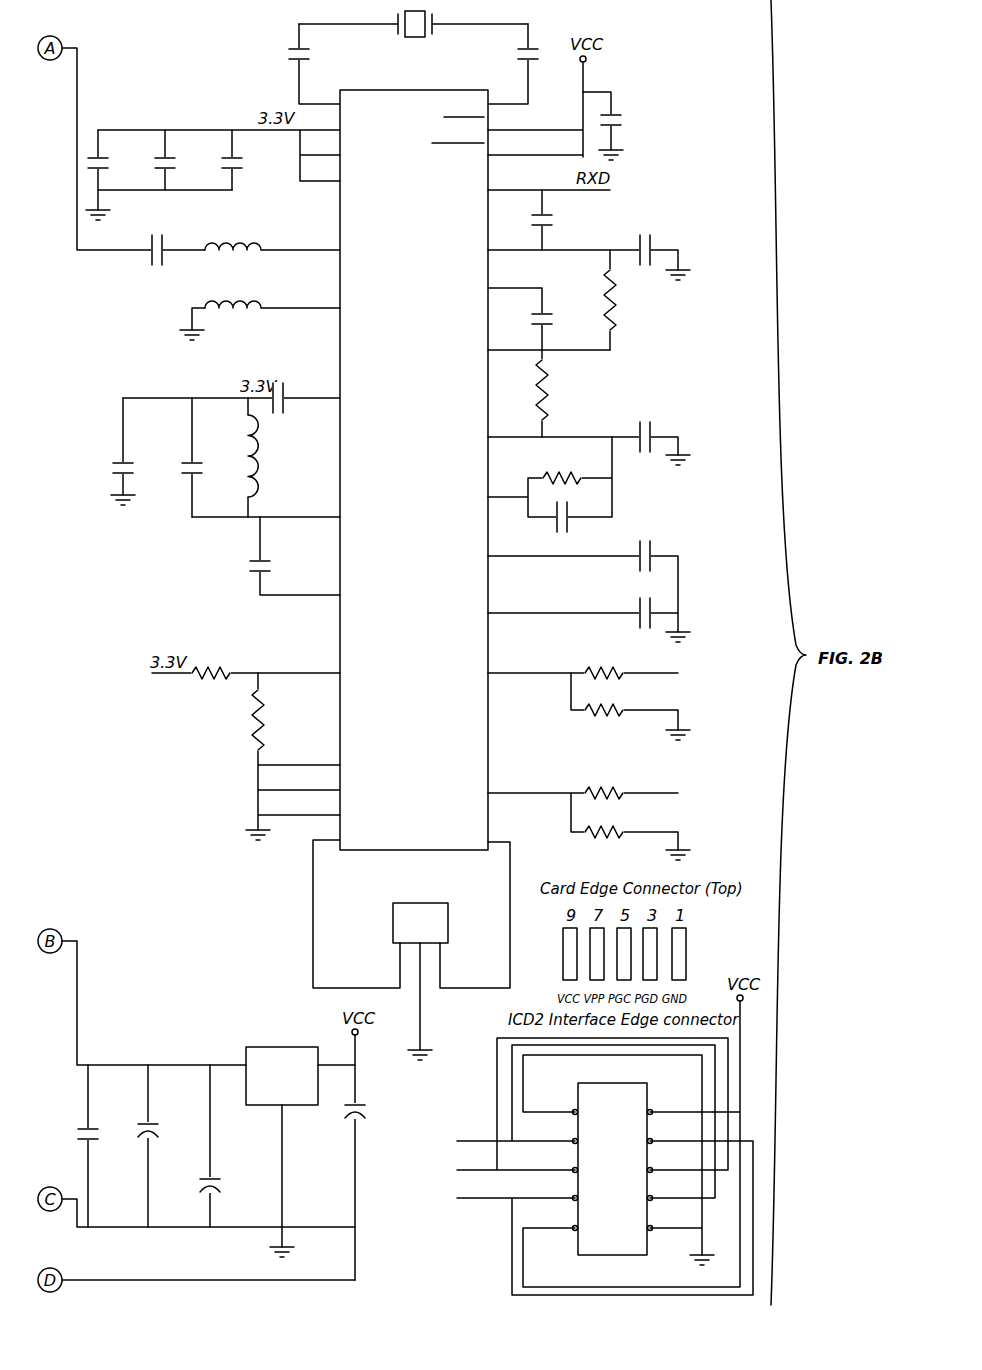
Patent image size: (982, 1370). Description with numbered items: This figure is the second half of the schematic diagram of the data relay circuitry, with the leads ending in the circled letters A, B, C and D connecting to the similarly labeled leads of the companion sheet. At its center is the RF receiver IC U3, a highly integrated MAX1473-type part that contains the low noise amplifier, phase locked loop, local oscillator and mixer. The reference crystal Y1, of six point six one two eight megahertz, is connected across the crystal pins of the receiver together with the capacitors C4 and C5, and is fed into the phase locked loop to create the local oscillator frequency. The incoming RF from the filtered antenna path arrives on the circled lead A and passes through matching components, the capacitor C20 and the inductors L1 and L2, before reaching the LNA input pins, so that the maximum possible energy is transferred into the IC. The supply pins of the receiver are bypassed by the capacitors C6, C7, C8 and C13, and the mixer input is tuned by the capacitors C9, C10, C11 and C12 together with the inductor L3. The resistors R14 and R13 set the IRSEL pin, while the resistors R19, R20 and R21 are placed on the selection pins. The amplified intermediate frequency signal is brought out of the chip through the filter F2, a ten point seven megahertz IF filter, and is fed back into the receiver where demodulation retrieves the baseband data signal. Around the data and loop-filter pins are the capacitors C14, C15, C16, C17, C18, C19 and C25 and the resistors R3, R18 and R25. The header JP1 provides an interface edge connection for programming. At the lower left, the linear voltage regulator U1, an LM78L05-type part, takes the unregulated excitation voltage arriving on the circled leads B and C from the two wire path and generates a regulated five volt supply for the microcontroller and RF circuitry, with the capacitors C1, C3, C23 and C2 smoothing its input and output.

The RF receiver IC U3 is at (414, 460).
The reference crystal Y1 is at (413, 32).
The 15pF capacitor C4 is at (317, 64).
The 15pF capacitor C5 is at (511, 64).
The 0.1uF capacitor C6 is at (118, 160).
The 0.01uF capacitor C7 is at (188, 160).
The 0.01uF capacitor C8 is at (255, 160).
The 220pF capacitor C20 is at (167, 254).
The 82nH inductor L1 is at (265, 232).
The 15nH inductor L2 is at (260, 305).
The 100pF capacitor C9 is at (297, 373).
The 2.7pF capacitor C10 is at (215, 457).
The 220pF capacitor C11 is at (149, 451).
The 15nH inductor L3 is at (274, 457).
The 100pF capacitor C12 is at (294, 556).
The resistor D.N.P R14 is at (246, 648).
The 0 ohm resistor R13 is at (293, 756).
The SFELF10M7FAOD-BD filter F2 is at (411, 950).
The 0.1uF capacitor C13 is at (624, 126).
The 10pF capacitor C14 is at (562, 220).
The 1000pF capacitor C16 is at (591, 233).
The 10K resistor R3 is at (627, 300).
The 470pF capacitor C15 is at (545, 319).
The 5.1K resistor R18 is at (563, 393).
The 0.47uF capacitor C17 is at (589, 420).
The 33K resistor R25 is at (550, 477).
The 0.47uF capacitor C25 is at (572, 513).
The 1500pF capacitor C18 is at (591, 553).
The 220pF capacitor C19 is at (589, 609).
The resistor D.N.P. R19 is at (586, 664).
The 0 ohm resistor R20 is at (630, 706).
The resistor D.N.P. R21 is at (589, 814).
The ICD2 interface edge connector header JP1 is at (605, 1148).
The linear voltage regulator U1 is at (293, 1129).
The 10uF capacitor C2 is at (376, 1157).
The 0.1uF capacitor C1 is at (111, 1146).
The 470uF/10V capacitor C3 is at (180, 1146).
The 470uF/10V capacitor C23 is at (246, 1146).